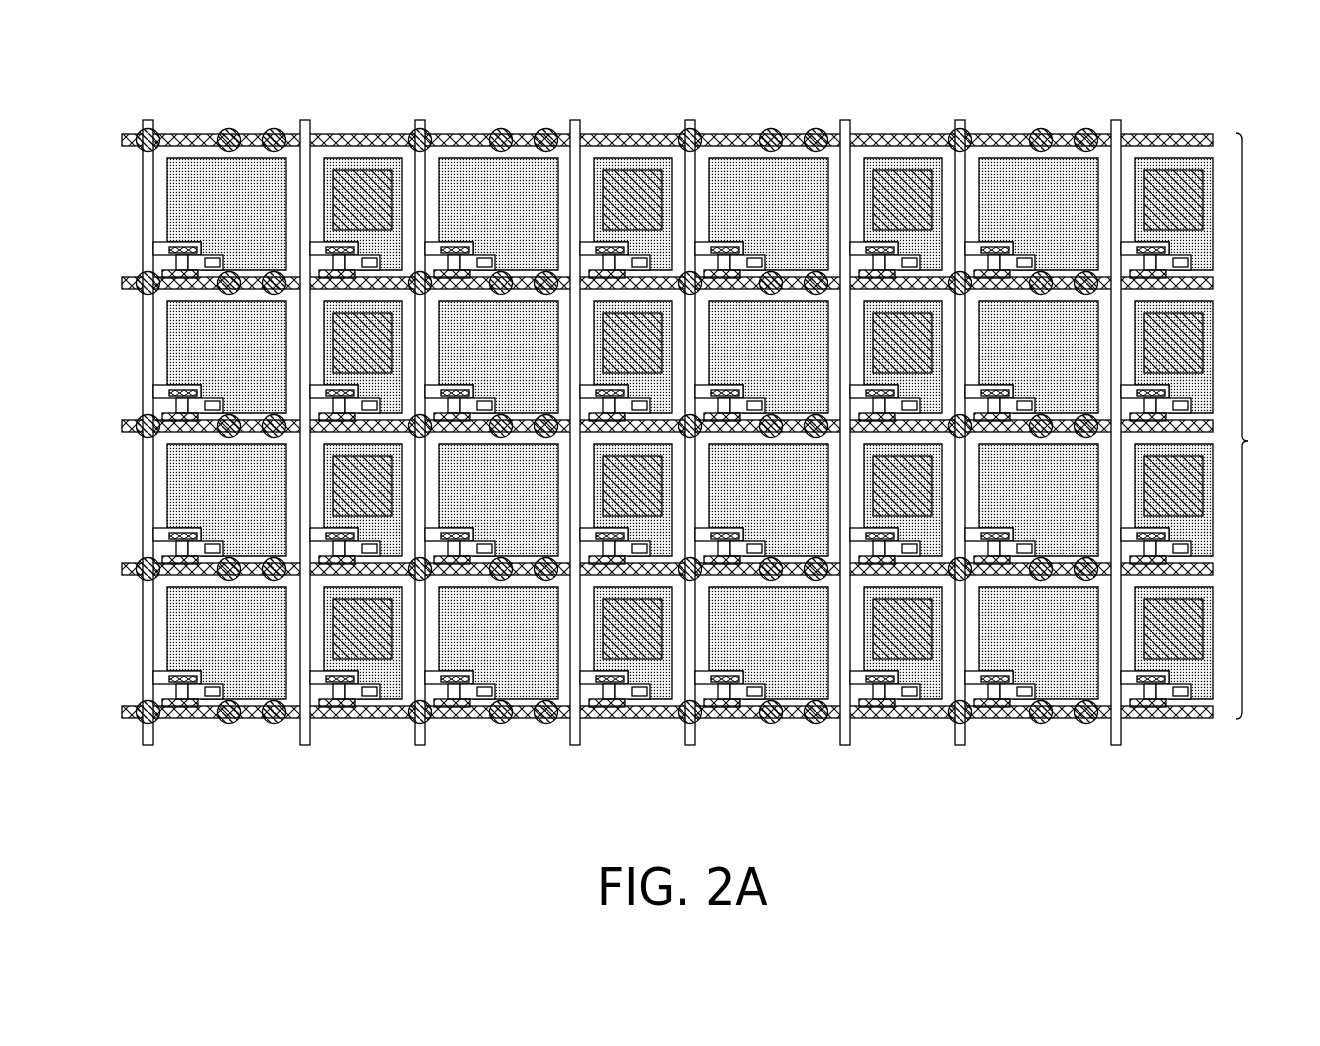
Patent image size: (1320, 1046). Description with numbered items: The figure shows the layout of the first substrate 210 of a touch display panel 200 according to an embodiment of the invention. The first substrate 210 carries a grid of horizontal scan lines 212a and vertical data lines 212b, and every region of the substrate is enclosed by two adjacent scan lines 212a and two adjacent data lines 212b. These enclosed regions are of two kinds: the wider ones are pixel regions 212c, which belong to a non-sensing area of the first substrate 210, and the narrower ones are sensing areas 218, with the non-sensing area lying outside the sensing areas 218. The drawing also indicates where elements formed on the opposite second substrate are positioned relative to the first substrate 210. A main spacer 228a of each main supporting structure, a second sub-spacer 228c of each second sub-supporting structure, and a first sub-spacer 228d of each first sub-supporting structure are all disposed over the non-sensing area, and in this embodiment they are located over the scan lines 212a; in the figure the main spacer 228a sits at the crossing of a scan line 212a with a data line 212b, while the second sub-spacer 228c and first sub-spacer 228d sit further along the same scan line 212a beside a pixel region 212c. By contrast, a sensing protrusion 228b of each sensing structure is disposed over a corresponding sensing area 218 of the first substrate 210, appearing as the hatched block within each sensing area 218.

The touch display panel 200 is at (1302, 807).
The first substrate 210 is at (1266, 426).
The scan lines 212a is at (132, 144).
The data lines 212b is at (151, 732).
The pixel regions 212c is at (735, 185).
The sensing areas 218 is at (882, 158).
The main spacer 228a is at (422, 136).
The sensing protrusion 228b is at (360, 185).
The second sub-spacer 228c is at (502, 132).
The first sub-spacer 228d is at (547, 132).